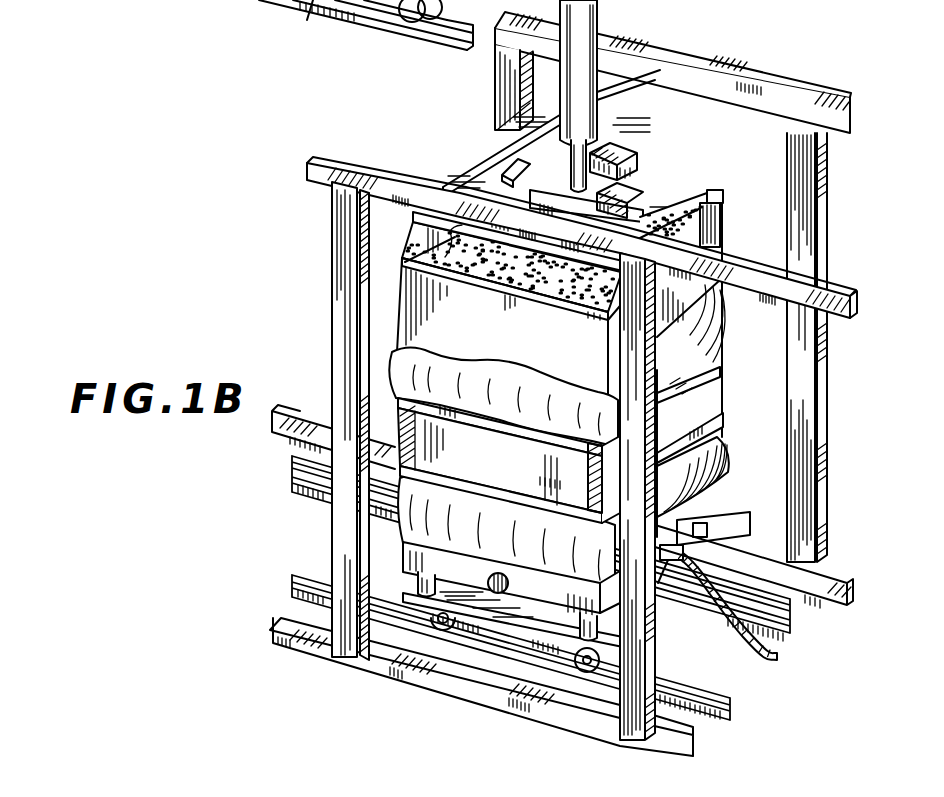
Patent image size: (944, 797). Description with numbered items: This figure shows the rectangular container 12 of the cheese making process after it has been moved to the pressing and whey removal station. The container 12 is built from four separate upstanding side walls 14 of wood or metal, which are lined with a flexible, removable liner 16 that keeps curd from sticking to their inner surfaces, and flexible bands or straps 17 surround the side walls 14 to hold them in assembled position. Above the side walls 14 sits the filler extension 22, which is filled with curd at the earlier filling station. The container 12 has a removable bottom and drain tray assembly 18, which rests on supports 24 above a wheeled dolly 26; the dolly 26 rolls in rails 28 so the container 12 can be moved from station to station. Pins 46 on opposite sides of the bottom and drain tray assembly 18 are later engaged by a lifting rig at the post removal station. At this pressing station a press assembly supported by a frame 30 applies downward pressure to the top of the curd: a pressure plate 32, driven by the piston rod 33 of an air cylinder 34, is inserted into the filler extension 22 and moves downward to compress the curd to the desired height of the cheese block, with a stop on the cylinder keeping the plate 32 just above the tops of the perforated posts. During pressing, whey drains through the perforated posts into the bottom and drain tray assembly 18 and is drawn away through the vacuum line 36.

The rectangular container 12 is at (727, 363).
The side walls 14 is at (492, 468).
The flexible, removable liner 16 is at (402, 354).
The flexible bands or straps 17 is at (586, 437).
The removable bottom and drain tray assembly 18 is at (383, 553).
The filler extension 22 is at (518, 343).
The supports 24 is at (438, 573).
The wheeled dolly 26 is at (656, 568).
The rails 28 is at (150, 8).
The frame 30 is at (322, 270).
The pressure plate 32 is at (487, 153).
The piston rod 33 is at (593, 168).
The air cylinder 34 is at (596, 24).
The vacuum line 36 is at (757, 652).
The pins 46 is at (512, 582).